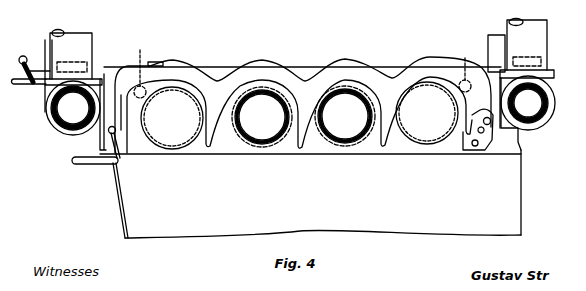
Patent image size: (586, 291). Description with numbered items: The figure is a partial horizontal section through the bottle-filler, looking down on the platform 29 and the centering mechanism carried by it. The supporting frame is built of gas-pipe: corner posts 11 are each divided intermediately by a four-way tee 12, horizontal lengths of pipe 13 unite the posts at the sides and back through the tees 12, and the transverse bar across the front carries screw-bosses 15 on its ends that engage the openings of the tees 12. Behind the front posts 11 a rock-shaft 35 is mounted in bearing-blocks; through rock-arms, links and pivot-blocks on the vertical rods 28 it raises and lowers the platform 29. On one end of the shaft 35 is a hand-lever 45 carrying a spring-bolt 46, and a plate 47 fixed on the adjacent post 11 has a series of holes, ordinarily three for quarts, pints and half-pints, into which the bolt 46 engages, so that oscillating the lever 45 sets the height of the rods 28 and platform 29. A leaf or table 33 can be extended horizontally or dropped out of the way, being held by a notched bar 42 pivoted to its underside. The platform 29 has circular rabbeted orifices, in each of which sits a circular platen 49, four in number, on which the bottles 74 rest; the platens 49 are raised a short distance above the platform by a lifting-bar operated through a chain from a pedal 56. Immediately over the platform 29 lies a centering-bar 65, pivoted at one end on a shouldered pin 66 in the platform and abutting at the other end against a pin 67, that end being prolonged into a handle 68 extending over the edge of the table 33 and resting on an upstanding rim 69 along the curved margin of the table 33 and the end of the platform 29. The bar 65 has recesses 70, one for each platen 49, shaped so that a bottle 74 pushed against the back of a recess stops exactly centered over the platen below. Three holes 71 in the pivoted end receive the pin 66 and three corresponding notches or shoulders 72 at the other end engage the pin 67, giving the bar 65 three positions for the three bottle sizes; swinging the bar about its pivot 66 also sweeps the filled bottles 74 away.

The corner posts 11 is at (62, 129).
The four-way tee 12 is at (48, 123).
The horizontal lengths of pipe 13 is at (82, 39).
The screw-bosses 15 is at (98, 134).
The vertical rods 28 is at (303, 67).
The platform 29 is at (220, 72).
The leaf 33 is at (310, 152).
The rock-shaft 35 is at (502, 68).
The notched bar 42 is at (493, 35).
The hand-lever 45 is at (23, 57).
The spring-bolt 46 is at (26, 85).
The plate 47 is at (45, 42).
The circular platen 49 is at (255, 162).
The pedal 56 is at (158, 63).
The centering-bar 65 is at (355, 63).
The shouldered pin 66 is at (492, 142).
The pin 67 is at (116, 105).
The handle 68 is at (80, 165).
The upstanding rim 69 is at (127, 223).
The recesses 70 is at (137, 143).
The holes 71 is at (478, 123).
The notches or shoulders 72 is at (122, 152).
The bottles 74 is at (254, 117).